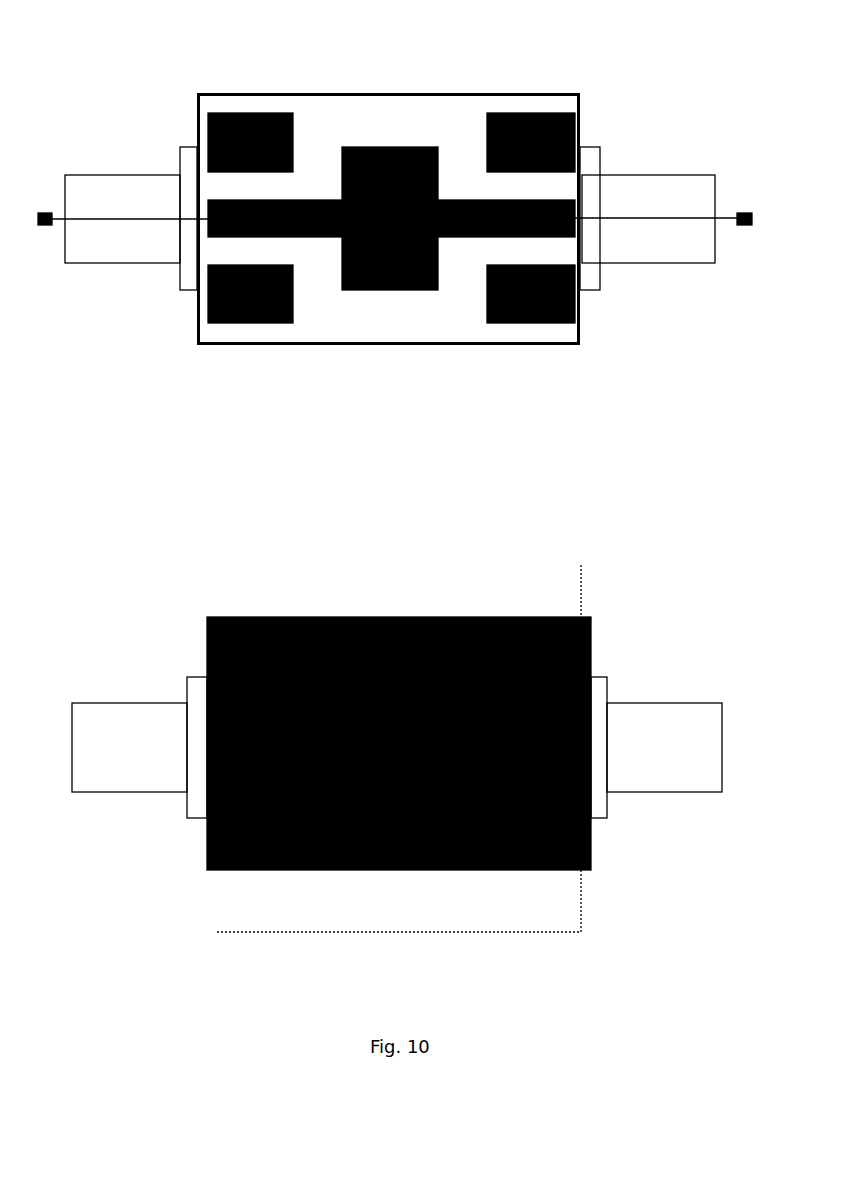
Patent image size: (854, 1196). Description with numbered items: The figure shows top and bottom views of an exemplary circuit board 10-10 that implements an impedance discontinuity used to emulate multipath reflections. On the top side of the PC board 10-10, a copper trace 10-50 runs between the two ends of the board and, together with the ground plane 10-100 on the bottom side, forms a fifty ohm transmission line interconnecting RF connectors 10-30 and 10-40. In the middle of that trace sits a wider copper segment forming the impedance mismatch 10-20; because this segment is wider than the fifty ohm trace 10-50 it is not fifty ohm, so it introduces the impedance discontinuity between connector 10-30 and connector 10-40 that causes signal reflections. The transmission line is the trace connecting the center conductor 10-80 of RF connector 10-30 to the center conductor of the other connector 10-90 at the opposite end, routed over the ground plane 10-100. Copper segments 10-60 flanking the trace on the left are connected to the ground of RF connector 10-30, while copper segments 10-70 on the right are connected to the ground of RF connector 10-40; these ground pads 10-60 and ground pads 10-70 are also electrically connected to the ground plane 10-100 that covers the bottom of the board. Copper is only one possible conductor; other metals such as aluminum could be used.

The circuit board 10-10 is at (395, 475).
The impedance mismatch 10-20 is at (382, 290).
The RF connector 10-30 is at (123, 167).
The RF connector 10-40 is at (685, 167).
The copper trace 10-50 is at (391, 320).
The copper segments 10-60 is at (238, 307).
The copper segments 10-70 is at (521, 319).
The center conductor 10-80 is at (46, 226).
The connector 10-90 is at (746, 227).
The ground plane 10-100 is at (349, 650).